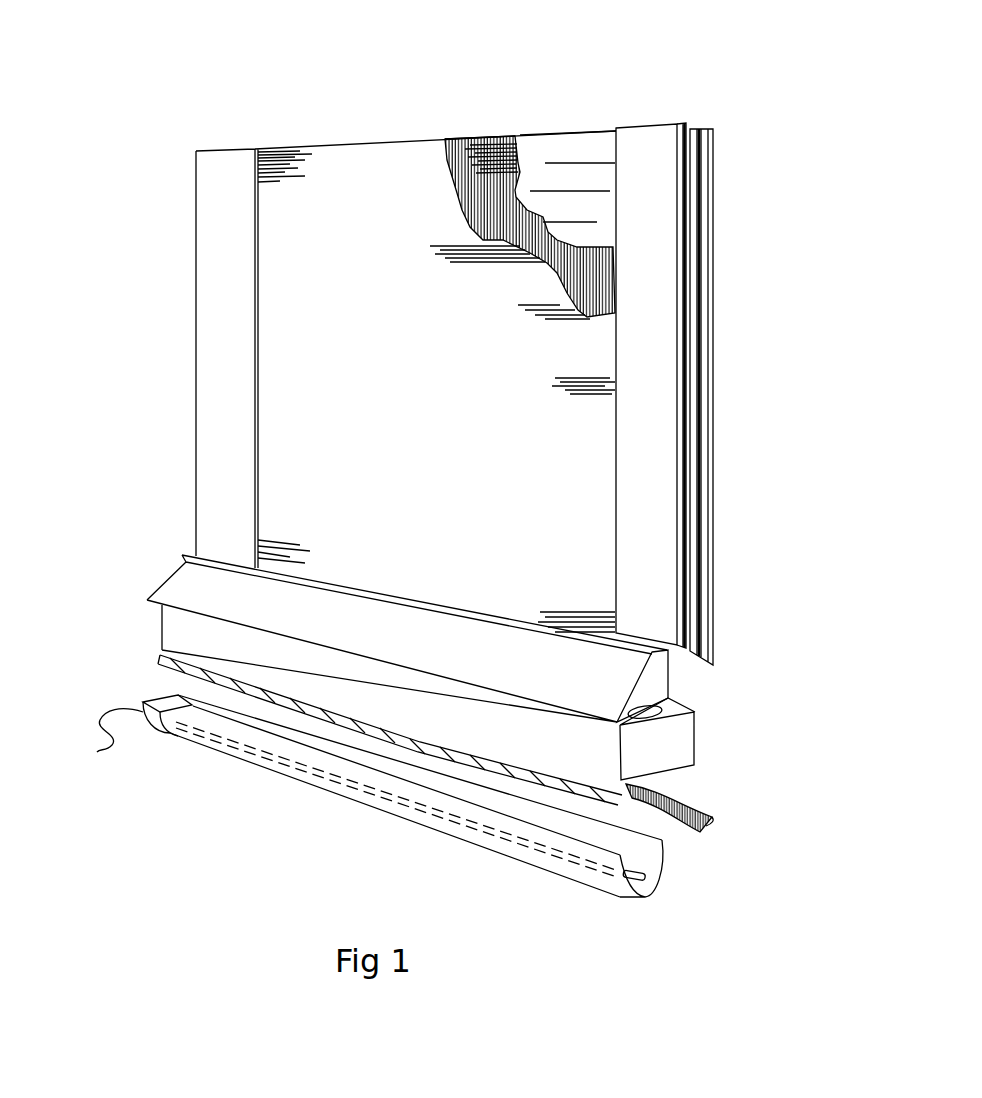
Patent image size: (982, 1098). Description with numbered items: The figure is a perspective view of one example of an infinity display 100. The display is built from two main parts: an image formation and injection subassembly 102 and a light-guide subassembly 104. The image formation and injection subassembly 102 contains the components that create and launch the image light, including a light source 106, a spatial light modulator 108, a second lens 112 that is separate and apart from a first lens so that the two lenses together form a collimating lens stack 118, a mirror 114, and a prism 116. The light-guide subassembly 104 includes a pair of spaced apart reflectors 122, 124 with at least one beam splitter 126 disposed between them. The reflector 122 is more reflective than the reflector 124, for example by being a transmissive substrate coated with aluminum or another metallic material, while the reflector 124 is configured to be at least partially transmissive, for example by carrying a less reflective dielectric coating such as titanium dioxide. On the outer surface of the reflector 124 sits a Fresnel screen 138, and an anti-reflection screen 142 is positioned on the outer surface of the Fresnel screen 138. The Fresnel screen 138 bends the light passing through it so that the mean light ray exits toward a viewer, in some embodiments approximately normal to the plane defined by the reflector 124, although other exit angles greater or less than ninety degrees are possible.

The infinity display 100 is at (160, 114).
The image formation and injection subassembly 102 is at (153, 542).
The light-guide subassembly 104 is at (146, 150).
The light source 106 is at (300, 765).
The spatial light modulator 108 is at (487, 745).
The second lens 112 is at (655, 707).
The mirror 114 is at (613, 683).
The prism 116 is at (546, 636).
The collimating lens stack 118 is at (665, 755).
The reflector 122 is at (705, 225).
The reflector 124 is at (567, 143).
The beam splitter 126 is at (700, 362).
The Fresnel screen 138 is at (341, 150).
The anti-reflection screen 142 is at (481, 145).